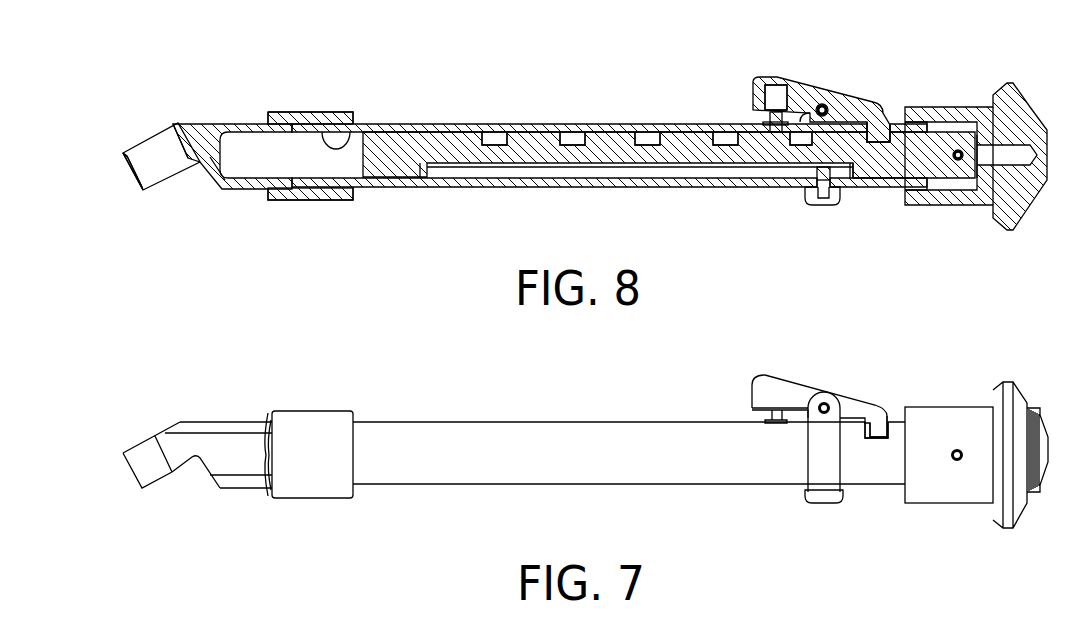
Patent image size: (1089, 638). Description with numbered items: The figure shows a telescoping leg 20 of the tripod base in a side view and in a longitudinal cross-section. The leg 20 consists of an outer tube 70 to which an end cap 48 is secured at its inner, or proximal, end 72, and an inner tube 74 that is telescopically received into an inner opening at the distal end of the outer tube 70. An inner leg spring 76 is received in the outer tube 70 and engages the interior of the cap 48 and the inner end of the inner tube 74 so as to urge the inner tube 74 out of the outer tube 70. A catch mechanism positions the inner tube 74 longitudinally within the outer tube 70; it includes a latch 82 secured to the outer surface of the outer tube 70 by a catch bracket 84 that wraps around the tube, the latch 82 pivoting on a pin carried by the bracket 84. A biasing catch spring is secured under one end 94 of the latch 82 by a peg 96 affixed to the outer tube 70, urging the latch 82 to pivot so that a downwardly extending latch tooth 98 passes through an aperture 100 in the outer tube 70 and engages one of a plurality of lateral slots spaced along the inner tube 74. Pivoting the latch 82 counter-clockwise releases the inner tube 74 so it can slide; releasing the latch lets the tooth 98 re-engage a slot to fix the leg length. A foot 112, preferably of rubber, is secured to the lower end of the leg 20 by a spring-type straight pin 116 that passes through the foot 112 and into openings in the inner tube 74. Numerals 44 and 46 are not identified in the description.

In FIG. 7, the leg 20 is at (535, 447).
In FIG. 8, the distal tip 44 is at (153, 148).
In FIG. 8, the tip end cap 46 is at (133, 181).
In FIG. 7, the tip end cap 46 is at (143, 470).
In FIG. 8, the end cap 48 is at (307, 112).
In FIG. 7, the end cap 48 is at (308, 410).
In FIG. 8, the outer tube 70 is at (612, 126).
In FIG. 7, the outer tube 70 is at (437, 465).
In FIG. 8, the inner end 72 is at (356, 134).
In FIG. 8, the inner tube 74 is at (425, 143).
In FIG. 8, the inner leg spring 76 is at (814, 78).
In FIG. 7, the inner leg spring 76 is at (846, 423).
In FIG. 8, the latch 82 is at (806, 92).
In FIG. 7, the latch 82 is at (767, 390).
In FIG. 7, the catch bracket 84 is at (815, 463).
In FIG. 8, the end of latch 94 is at (751, 100).
In FIG. 8, the peg 96 is at (764, 120).
In FIG. 8, the latch tooth 98 is at (879, 126).
In FIG. 7, the latch tooth 98 is at (877, 430).
In FIG. 8, the aperture 100 is at (568, 137).
In FIG. 7, the aperture 100 is at (892, 436).
In FIG. 8, the foot 112 is at (938, 207).
In FIG. 7, the foot 112 is at (967, 410).
In FIG. 7, the spring-type straight pin 116 is at (957, 462).